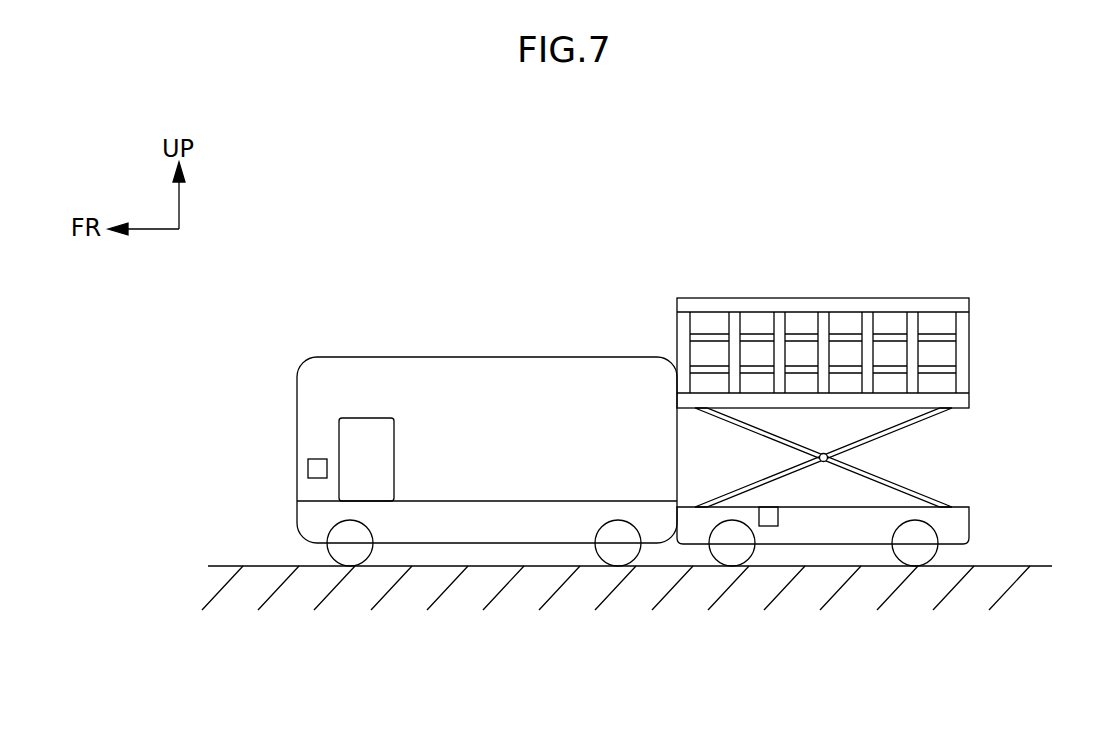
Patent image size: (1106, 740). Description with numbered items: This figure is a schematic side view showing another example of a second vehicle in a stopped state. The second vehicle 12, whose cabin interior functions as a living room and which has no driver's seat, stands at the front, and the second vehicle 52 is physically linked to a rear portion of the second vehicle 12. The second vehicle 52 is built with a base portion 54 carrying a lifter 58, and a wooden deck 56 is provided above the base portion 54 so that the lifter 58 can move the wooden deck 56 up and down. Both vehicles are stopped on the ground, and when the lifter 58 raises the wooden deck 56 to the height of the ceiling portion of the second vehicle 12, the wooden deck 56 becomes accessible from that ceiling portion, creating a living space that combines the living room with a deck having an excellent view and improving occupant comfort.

The second vehicle 12 is at (415, 357).
The second vehicle 52 is at (857, 298).
The base portion 54 is at (969, 525).
The wooden deck 56 is at (969, 347).
The lifter 58 is at (922, 493).